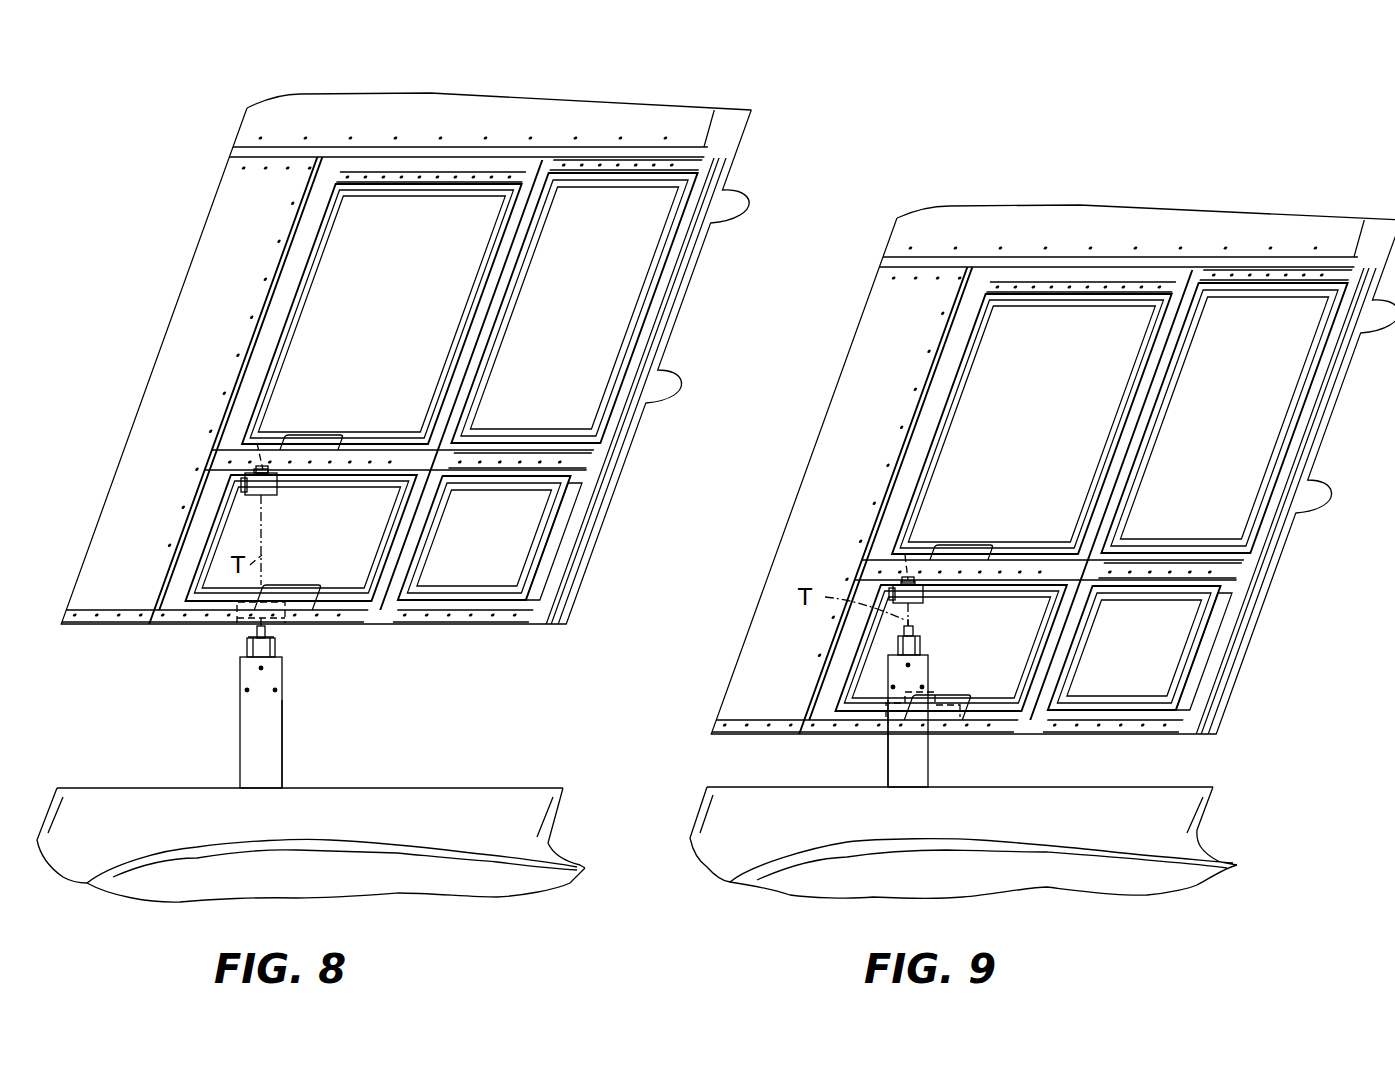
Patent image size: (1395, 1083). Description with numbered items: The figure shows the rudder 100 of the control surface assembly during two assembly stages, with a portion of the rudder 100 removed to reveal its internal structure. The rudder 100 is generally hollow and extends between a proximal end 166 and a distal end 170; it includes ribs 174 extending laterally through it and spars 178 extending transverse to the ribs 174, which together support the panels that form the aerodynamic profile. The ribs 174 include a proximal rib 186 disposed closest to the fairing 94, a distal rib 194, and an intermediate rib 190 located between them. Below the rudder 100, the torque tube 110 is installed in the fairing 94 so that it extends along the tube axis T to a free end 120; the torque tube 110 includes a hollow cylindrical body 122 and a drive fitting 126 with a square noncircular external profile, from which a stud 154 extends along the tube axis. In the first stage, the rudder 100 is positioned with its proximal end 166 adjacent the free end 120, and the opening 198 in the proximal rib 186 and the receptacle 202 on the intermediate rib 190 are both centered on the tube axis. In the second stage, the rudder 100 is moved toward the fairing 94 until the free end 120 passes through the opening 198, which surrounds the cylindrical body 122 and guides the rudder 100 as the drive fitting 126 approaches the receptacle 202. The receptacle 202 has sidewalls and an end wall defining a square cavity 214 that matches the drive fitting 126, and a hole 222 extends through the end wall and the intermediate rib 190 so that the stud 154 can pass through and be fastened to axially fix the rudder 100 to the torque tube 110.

In FIG. 8, the fairing 94 is at (495, 820).
In FIG. 9, the fairing 94 is at (1173, 812).
In FIG. 8, the rudder 100 is at (193, 342).
In FIG. 9, the rudder 100 is at (870, 395).
In FIG. 8, the torque tube 110 is at (248, 762).
In FIG. 9, the torque tube 110 is at (930, 765).
In FIG. 8, the free end 120 is at (240, 650).
In FIG. 9, the free end 120 is at (920, 650).
In FIG. 8, the cylindrical body 122 is at (285, 743).
In FIG. 9, the cylindrical body 122 is at (890, 745).
In FIG. 8, the drive fitting 126 is at (285, 650).
In FIG. 9, the drive fitting 126 is at (898, 648).
In FIG. 8, the stud 154 is at (270, 627).
In FIG. 9, the stud 154 is at (905, 627).
In FIG. 8, the proximal end 166 is at (112, 628).
In FIG. 9, the proximal end 166 is at (1205, 735).
In FIG. 8, the distal end 170 is at (300, 105).
In FIG. 9, the distal end 170 is at (1060, 212).
In FIG. 8, the ribs 174 is at (535, 457).
In FIG. 8, the spars 178 is at (290, 317).
In FIG. 9, the spars 178 is at (1087, 500).
In FIG. 8, the proximal rib 186 is at (430, 617).
In FIG. 9, the proximal rib 186 is at (1105, 722).
In FIG. 8, the intermediate rib 190 is at (377, 460).
In FIG. 9, the intermediate rib 190 is at (1060, 572).
In FIG. 8, the distal rib 194 is at (427, 163).
In FIG. 9, the distal rib 194 is at (1068, 283).
In FIG. 8, the opening 198 is at (290, 610).
In FIG. 9, the opening 198 is at (960, 730).
In FIG. 8, the receptacle 202 is at (277, 477).
In FIG. 9, the receptacle 202 is at (935, 590).
In FIG. 8, the cavity 214 is at (245, 490).
In FIG. 9, the cavity 214 is at (883, 568).
In FIG. 8, the hole 222 is at (257, 443).
In FIG. 9, the hole 222 is at (905, 555).